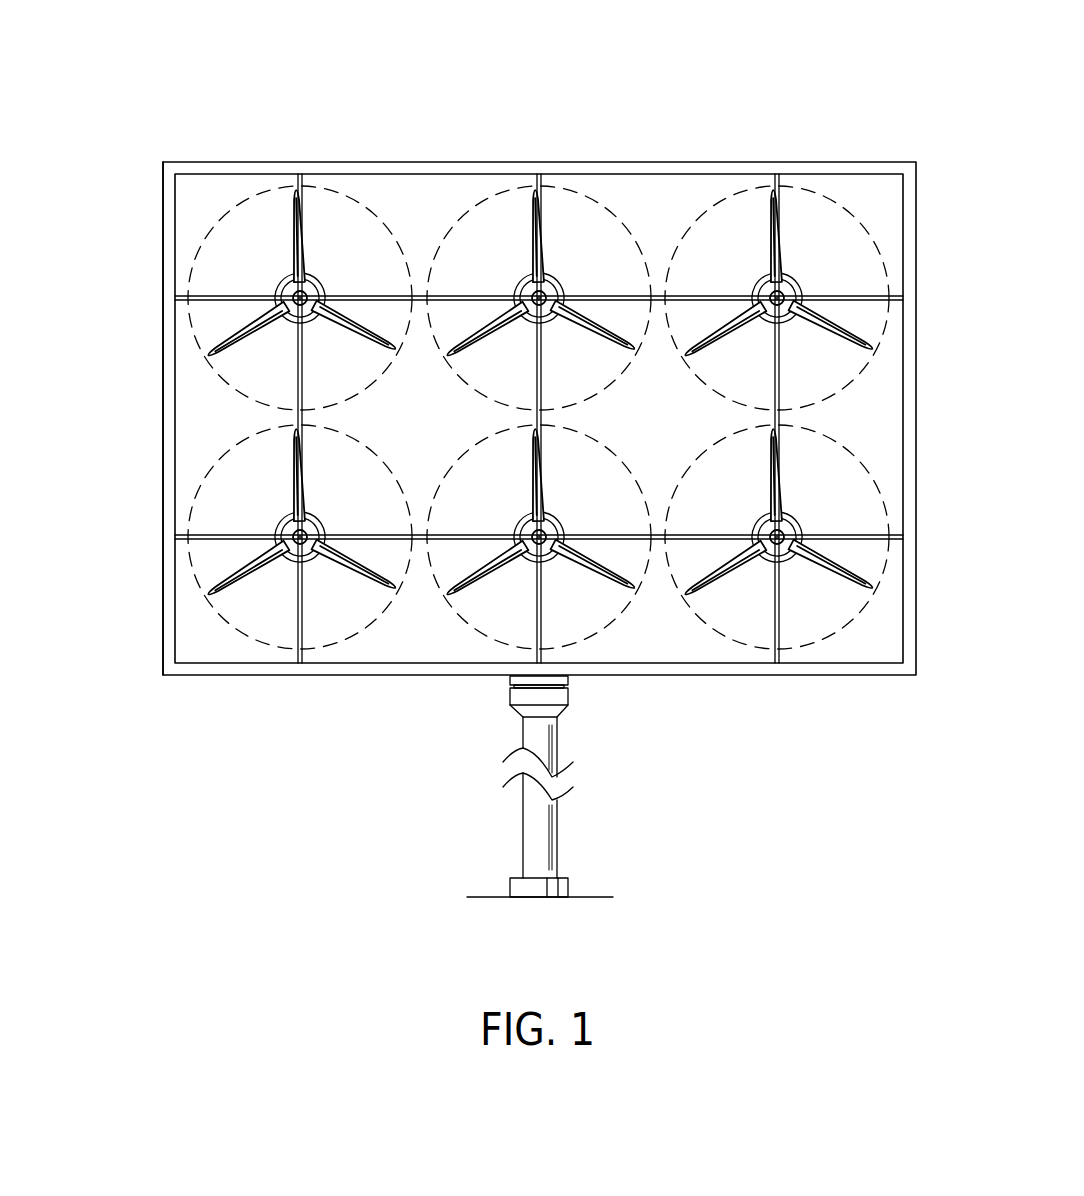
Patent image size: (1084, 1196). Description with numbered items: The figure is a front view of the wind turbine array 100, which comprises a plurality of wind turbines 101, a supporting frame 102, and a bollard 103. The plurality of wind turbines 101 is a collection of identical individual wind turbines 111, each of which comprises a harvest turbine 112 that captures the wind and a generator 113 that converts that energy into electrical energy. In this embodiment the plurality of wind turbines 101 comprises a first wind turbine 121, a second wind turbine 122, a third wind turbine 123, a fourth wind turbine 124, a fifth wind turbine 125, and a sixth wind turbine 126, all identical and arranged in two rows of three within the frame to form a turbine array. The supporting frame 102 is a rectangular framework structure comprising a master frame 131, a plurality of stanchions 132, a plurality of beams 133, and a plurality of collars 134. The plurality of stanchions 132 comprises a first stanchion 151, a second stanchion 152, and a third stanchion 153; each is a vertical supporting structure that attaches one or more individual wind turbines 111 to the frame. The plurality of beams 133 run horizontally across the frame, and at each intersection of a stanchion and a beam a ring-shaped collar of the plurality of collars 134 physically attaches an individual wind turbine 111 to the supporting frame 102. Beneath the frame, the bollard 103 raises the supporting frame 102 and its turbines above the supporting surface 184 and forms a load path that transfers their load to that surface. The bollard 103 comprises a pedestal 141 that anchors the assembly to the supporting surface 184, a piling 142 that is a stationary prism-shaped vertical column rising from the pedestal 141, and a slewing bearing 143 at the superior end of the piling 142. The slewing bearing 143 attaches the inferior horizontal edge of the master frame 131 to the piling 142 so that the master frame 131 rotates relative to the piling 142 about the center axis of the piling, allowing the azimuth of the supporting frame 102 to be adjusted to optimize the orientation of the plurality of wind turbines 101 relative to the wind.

The wind turbine array 100 is at (186, 110).
The plurality of wind turbines 101 is at (480, 242).
The supporting frame 102 is at (738, 161).
The bollard 103 is at (557, 847).
The individual wind turbine 111 is at (300, 565).
The harvest turbine 112 is at (533, 467).
The generator 113 is at (557, 515).
The first wind turbine 121 is at (228, 200).
The second wind turbine 122 is at (573, 190).
The third wind turbine 123 is at (838, 205).
The fourth wind turbine 124 is at (388, 460).
The fifth wind turbine 125 is at (455, 617).
The sixth wind turbine 126 is at (870, 430).
The master frame 131 is at (165, 615).
The plurality of stanchions 132 is at (303, 656).
The plurality of beams 133 is at (218, 537).
The plurality of collars 134 is at (313, 268).
The pedestal 141 is at (568, 883).
The piling 142 is at (545, 815).
The slewing bearing 143 is at (568, 678).
The first stanchion 151 is at (303, 387).
The second stanchion 152 is at (538, 395).
The third stanchion 153 is at (778, 362).
The supporting surface 184 is at (480, 897).